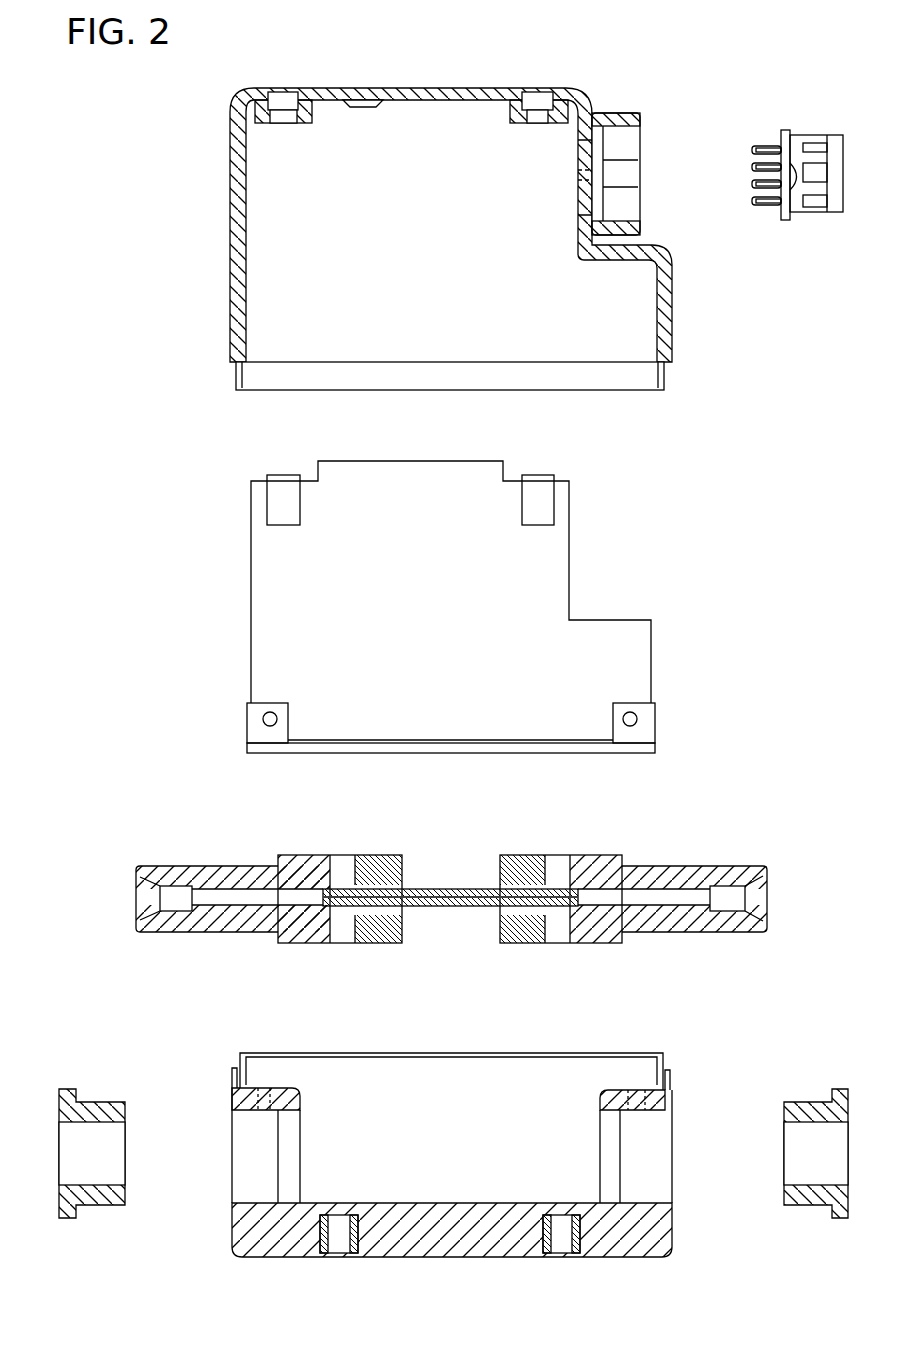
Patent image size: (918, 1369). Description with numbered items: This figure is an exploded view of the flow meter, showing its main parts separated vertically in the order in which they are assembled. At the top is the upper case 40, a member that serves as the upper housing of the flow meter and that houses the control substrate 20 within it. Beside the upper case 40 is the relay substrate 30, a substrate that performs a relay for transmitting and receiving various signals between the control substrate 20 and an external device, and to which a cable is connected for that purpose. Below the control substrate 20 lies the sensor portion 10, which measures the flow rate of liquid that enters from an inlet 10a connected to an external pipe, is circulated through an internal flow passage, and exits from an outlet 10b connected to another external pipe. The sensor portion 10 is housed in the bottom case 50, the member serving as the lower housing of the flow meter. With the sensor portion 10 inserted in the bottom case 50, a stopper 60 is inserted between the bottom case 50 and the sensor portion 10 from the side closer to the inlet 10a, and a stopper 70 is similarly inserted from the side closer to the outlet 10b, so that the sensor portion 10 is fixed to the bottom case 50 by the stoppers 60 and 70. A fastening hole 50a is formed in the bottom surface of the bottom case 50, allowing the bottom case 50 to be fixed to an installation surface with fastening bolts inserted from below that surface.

The sensor portion 10 is at (449, 869).
The inlet 10a is at (142, 897).
The outlet 10b is at (760, 896).
The control substrate 20 is at (674, 658).
The relay substrate 30 is at (813, 240).
The upper case 40 is at (401, 88).
The bottom case 50 is at (672, 1080).
The fastening hole 50a is at (339, 1244).
The stopper 60 is at (97, 1100).
The stopper 70 is at (806, 1100).